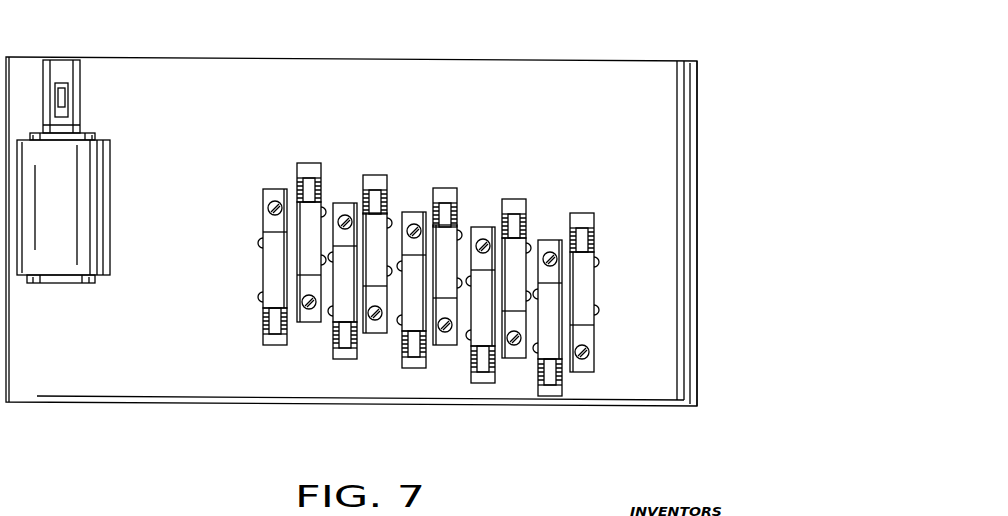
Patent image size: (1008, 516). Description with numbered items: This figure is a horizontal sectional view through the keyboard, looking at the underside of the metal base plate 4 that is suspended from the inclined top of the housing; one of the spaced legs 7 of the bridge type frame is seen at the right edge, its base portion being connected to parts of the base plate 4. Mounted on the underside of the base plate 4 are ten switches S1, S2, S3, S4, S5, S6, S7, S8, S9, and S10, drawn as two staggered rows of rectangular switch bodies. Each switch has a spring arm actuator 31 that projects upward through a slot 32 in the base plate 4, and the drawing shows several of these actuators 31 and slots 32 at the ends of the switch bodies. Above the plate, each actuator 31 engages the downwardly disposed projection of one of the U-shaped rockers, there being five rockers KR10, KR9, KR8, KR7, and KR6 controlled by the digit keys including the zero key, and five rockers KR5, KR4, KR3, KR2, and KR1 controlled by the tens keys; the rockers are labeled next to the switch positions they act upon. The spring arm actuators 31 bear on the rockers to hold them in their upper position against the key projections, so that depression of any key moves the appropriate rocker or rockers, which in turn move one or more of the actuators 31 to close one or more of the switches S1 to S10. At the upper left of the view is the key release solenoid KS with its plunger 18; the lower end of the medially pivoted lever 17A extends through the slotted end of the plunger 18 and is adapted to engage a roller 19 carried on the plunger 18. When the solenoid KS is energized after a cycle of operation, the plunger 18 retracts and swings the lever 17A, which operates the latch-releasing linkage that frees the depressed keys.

The base plate 4 is at (633, 70).
The leg 7 is at (691, 138).
The roller 19 is at (61, 63).
The lever 17A is at (68, 95).
The plunger 18 is at (80, 126).
The key release solenoid KS is at (110, 190).
The spring arm actuator 31 is at (376, 188).
The slot 32 is at (308, 172).
The rocker KR1 is at (265, 336).
The rocker KR2 is at (352, 350).
The rocker KR3 is at (413, 368).
The rocker KR4 is at (493, 370).
The rocker KR5 is at (563, 386).
The rocker KR6 is at (597, 238).
The rocker KR7 is at (506, 232).
The rocker KR8 is at (447, 208).
The rocker KR9 is at (386, 193).
The rocker KR10 is at (303, 179).
The switch S1 is at (281, 271).
The switch S2 is at (351, 285).
The switch S3 is at (420, 294).
The switch S4 is at (489, 309).
The switch S5 is at (556, 322).
The switch S6 is at (589, 299).
The switch S7 is at (521, 285).
The switch S8 is at (452, 272).
The switch S9 is at (382, 260).
The switch S10 is at (315, 252).